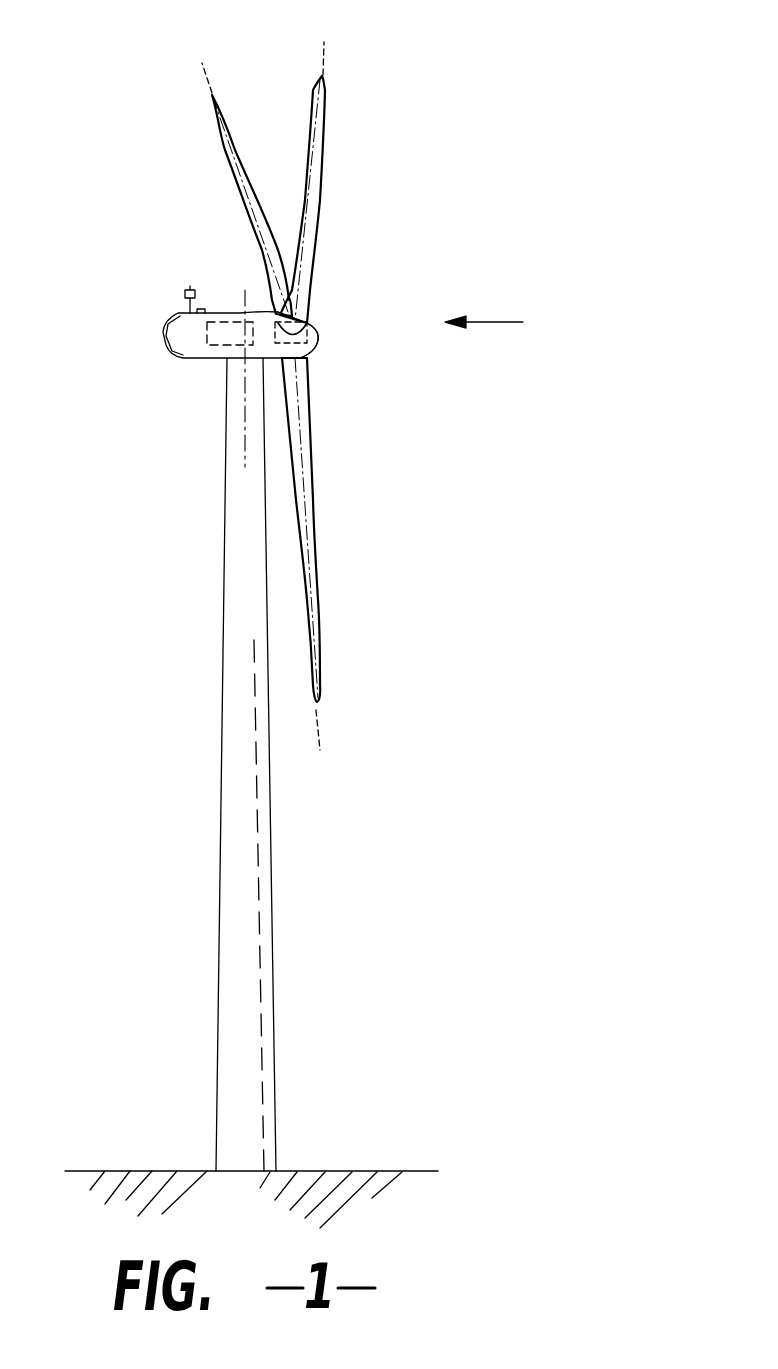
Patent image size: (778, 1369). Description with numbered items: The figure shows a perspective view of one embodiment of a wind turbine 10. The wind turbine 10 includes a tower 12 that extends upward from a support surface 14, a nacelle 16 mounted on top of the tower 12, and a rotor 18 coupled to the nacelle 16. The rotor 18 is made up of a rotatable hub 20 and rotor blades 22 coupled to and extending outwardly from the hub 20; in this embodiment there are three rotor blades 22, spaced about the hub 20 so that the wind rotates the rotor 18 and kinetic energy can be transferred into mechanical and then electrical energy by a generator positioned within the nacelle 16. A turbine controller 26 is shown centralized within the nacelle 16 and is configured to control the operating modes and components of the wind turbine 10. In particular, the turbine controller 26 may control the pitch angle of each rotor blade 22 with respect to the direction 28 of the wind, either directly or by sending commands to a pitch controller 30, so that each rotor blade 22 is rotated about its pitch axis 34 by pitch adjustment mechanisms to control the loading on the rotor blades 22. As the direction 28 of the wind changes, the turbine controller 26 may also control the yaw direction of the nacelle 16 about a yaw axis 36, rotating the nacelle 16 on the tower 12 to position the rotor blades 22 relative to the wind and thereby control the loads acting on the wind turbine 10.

The wind turbine 10 is at (422, 151).
The tower 12 is at (232, 877).
The support surface 14 is at (147, 1171).
The nacelle 16 is at (202, 358).
The rotor 18 is at (321, 312).
The rotatable hub 20 is at (316, 341).
The rotor blade 22 is at (250, 186).
The turbine controller 26 is at (220, 307).
The direction of the wind 28 is at (497, 322).
The pitch controller 30 is at (320, 325).
The pitch axis 34 is at (202, 85).
The yaw axis 36 is at (245, 415).